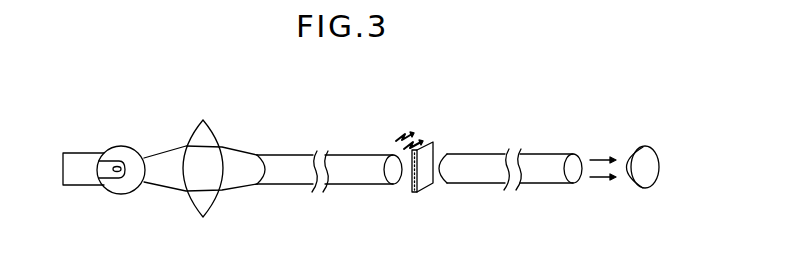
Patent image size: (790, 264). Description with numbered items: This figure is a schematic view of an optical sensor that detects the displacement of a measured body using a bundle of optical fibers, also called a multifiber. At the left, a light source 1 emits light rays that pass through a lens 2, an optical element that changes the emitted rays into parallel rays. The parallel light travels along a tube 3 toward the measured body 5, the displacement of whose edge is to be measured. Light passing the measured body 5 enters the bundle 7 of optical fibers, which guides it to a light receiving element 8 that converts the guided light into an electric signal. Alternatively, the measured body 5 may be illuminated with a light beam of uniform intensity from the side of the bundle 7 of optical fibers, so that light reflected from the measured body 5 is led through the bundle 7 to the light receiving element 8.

The light source 1 is at (121, 147).
The lens 2 is at (210, 123).
The light guide 3 is at (353, 153).
The measured body 5 is at (433, 142).
The bundle of optical fibers 7 is at (482, 152).
The light receiving element 8 is at (640, 152).